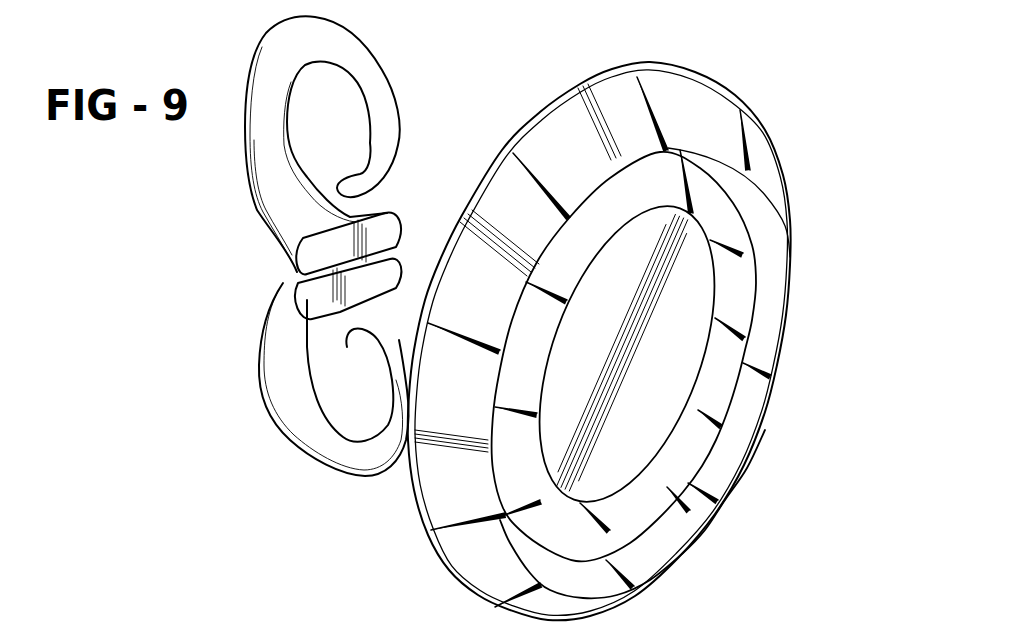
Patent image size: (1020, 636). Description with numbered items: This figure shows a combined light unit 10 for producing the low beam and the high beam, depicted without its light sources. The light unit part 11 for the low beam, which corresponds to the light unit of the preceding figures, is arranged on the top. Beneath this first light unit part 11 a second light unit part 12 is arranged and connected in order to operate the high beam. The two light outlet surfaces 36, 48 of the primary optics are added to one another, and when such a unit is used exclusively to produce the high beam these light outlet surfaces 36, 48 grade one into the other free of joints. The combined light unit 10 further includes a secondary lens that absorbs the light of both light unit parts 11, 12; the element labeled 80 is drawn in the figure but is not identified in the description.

The combined light unit 10 is at (279, 252).
The light unit part for the low beam 11 is at (226, 146).
The second light unit part 12 is at (240, 380).
The light outlet surface 36 is at (306, 251).
The light outlet surface 48 is at (308, 298).
The edge flange of second hook arm 80 is at (275, 421).